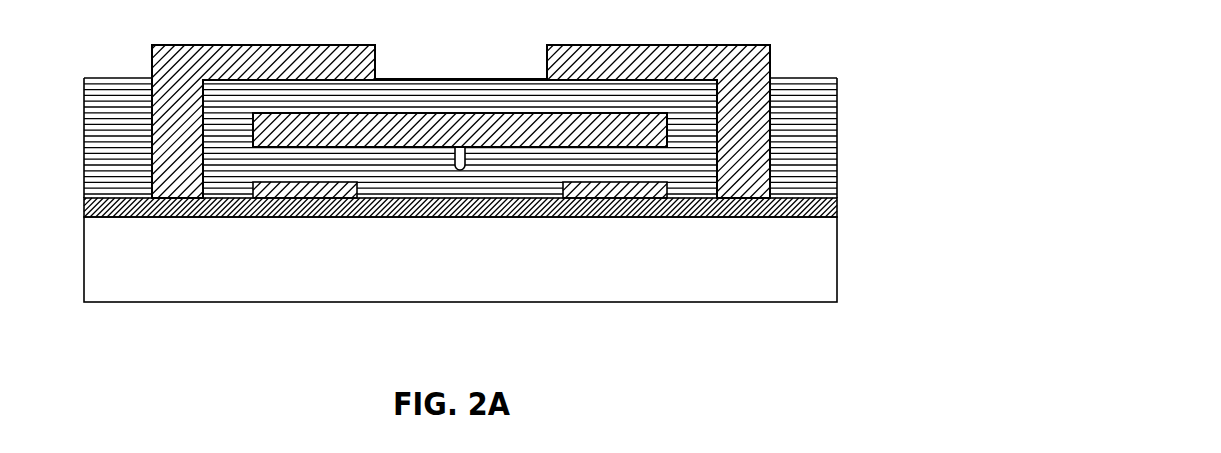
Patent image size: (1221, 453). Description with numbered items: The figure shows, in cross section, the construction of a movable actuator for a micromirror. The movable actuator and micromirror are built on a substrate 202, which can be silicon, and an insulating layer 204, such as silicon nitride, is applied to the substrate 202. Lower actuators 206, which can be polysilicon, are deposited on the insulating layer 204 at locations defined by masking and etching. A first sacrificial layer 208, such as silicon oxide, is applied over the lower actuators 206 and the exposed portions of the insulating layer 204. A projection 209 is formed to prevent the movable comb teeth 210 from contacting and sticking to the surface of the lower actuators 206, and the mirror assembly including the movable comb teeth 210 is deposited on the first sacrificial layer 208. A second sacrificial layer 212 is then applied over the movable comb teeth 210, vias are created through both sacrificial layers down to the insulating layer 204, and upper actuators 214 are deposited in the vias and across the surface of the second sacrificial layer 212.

The substrate 202 is at (460, 259).
The insulating layer 204 is at (837, 205).
The lower actuators 206 is at (620, 198).
The first sacrificial layer 208 is at (837, 183).
The projection 209 is at (466, 158).
The movable comb teeth 210 is at (718, 118).
The second sacrificial layer 212 is at (837, 130).
The upper actuators 214 is at (608, 44).